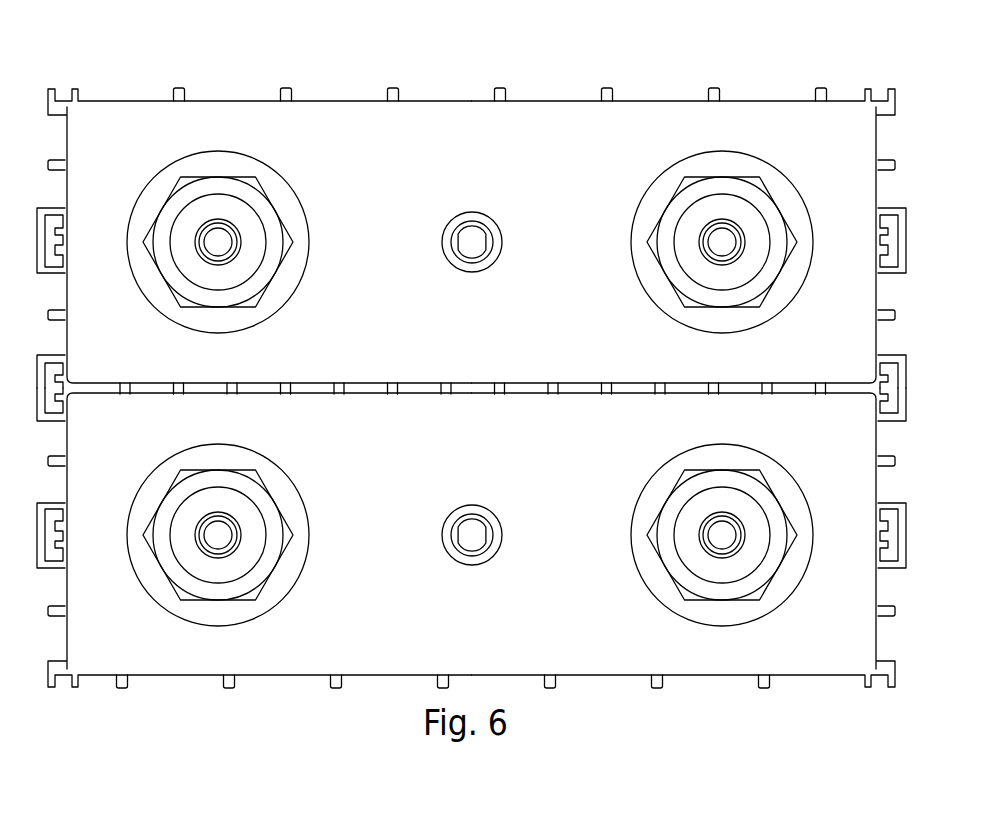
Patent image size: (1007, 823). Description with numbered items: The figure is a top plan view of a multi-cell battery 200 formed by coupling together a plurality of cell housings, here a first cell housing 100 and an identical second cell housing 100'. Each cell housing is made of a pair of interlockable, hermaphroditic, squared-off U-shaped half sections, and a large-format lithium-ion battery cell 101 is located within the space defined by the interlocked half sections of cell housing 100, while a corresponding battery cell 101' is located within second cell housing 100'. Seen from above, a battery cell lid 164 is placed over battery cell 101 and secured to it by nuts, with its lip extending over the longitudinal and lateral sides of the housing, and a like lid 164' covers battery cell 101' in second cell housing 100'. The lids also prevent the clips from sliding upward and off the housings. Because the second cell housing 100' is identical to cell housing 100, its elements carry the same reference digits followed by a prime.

The multi-cell battery 200 is at (513, 384).
The cell housing 100 is at (510, 560).
The second cell housing 100' is at (513, 209).
The battery cell 101 is at (218, 591).
The battery cell 101' is at (218, 181).
The battery cell lid 164 is at (447, 496).
The battery cell lid 164' is at (505, 212).